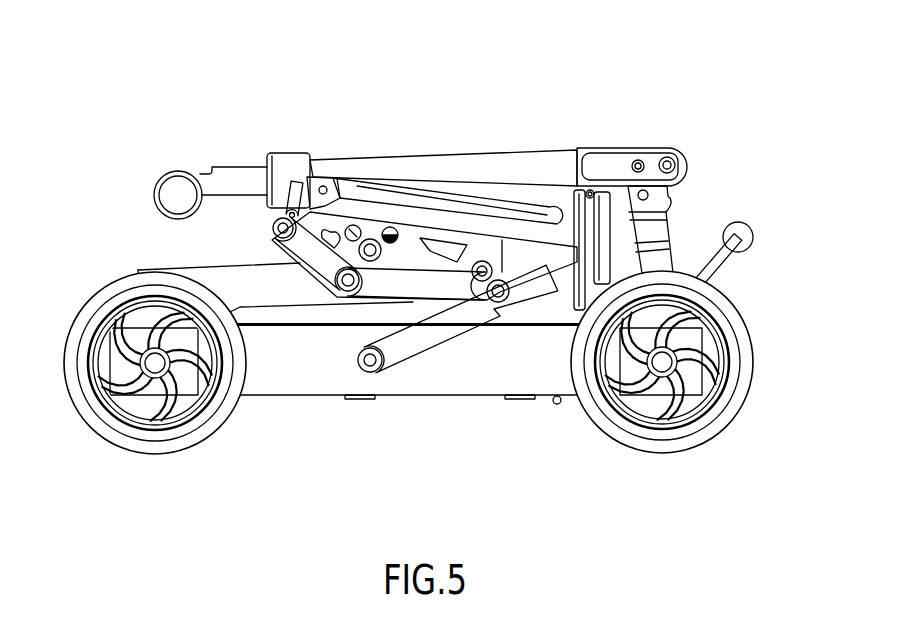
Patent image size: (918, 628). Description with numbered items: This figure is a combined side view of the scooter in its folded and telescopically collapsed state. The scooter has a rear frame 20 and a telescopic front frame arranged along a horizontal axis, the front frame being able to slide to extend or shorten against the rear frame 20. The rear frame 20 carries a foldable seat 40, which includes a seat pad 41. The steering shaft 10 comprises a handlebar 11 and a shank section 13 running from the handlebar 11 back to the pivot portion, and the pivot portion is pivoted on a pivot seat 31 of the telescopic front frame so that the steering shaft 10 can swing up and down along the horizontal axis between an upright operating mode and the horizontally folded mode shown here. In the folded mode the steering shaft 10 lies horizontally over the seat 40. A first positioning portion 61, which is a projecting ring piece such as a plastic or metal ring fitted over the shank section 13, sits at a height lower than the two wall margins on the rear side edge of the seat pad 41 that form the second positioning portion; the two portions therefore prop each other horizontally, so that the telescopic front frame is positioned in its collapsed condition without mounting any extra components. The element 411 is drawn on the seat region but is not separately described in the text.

The steering shaft 10 is at (498, 114).
The handlebar 11 is at (158, 172).
The shank section 13 is at (507, 158).
The rear frame 20 is at (288, 367).
The pivot seat 31 is at (676, 197).
The foldable seat 40 is at (435, 133).
The seat pad 41 is at (365, 210).
The seat plate 411 is at (455, 200).
The first positioning portion 61 is at (282, 152).